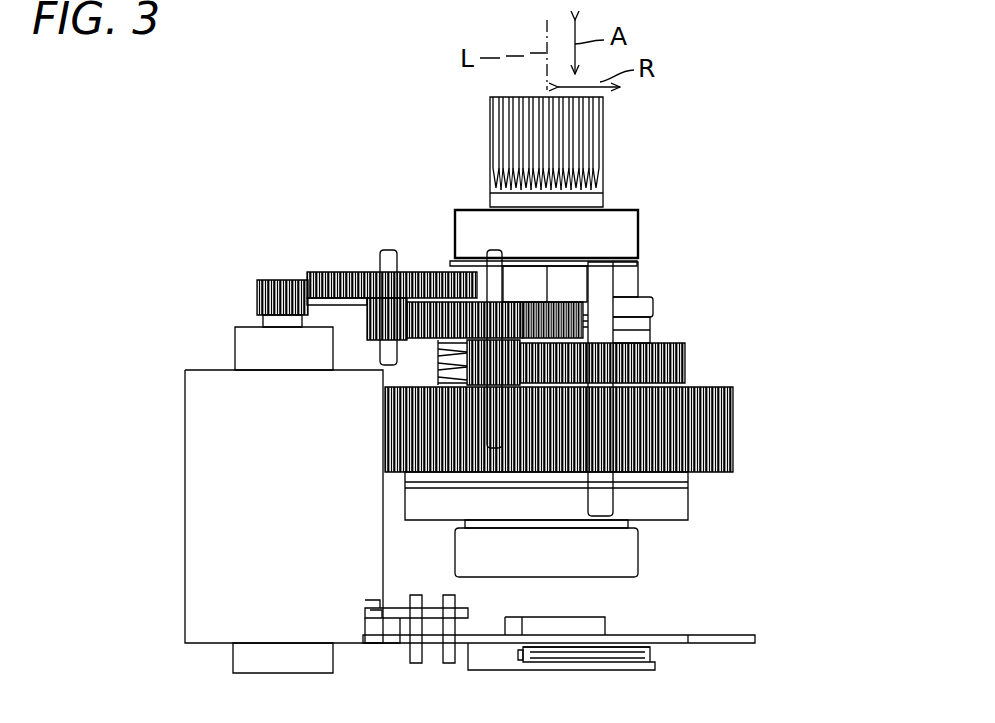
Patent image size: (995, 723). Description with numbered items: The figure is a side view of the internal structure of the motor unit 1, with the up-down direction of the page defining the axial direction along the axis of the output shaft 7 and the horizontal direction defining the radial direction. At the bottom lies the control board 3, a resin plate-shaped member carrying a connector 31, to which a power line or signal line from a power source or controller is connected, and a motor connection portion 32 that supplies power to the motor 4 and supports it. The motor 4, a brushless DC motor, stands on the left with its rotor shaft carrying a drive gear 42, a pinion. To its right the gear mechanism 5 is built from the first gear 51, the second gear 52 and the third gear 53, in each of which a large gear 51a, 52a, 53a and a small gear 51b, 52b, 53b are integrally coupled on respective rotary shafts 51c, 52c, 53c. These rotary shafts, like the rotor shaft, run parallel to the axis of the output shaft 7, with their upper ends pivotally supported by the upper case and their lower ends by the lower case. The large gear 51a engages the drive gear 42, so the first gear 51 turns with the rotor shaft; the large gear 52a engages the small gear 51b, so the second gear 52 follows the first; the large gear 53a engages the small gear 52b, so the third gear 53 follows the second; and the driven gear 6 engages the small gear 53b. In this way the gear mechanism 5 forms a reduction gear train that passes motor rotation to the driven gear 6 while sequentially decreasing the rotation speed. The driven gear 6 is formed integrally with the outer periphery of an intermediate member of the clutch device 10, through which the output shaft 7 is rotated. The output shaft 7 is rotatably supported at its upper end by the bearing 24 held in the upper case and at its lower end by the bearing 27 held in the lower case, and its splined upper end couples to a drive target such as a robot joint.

The motor unit 1 is at (368, 108).
The control board 3 is at (722, 635).
The motor 4 is at (183, 525).
The gear mechanism 5 is at (425, 262).
The driven gear 6 is at (735, 430).
The output shaft 7 is at (605, 135).
The clutch device 10 is at (652, 262).
The bearing 24 is at (640, 220).
The bearing 27 is at (630, 555).
The connector 31 is at (635, 668).
The motor connection portion 32 is at (397, 605).
The drive gear 42 is at (258, 294).
The first gear 51 is at (365, 272).
The large gear 51a is at (320, 272).
The small gear 51b is at (362, 322).
The rotary shaft 51c is at (388, 250).
The second gear 52 is at (452, 290).
The large gear 52a is at (550, 302).
The small gear 52b is at (472, 362).
The rotary shaft 52c is at (498, 278).
The third gear 53 is at (668, 343).
The large gear 53a is at (636, 326).
The small gear 53b is at (617, 437).
The rotary shaft 53c is at (607, 282).